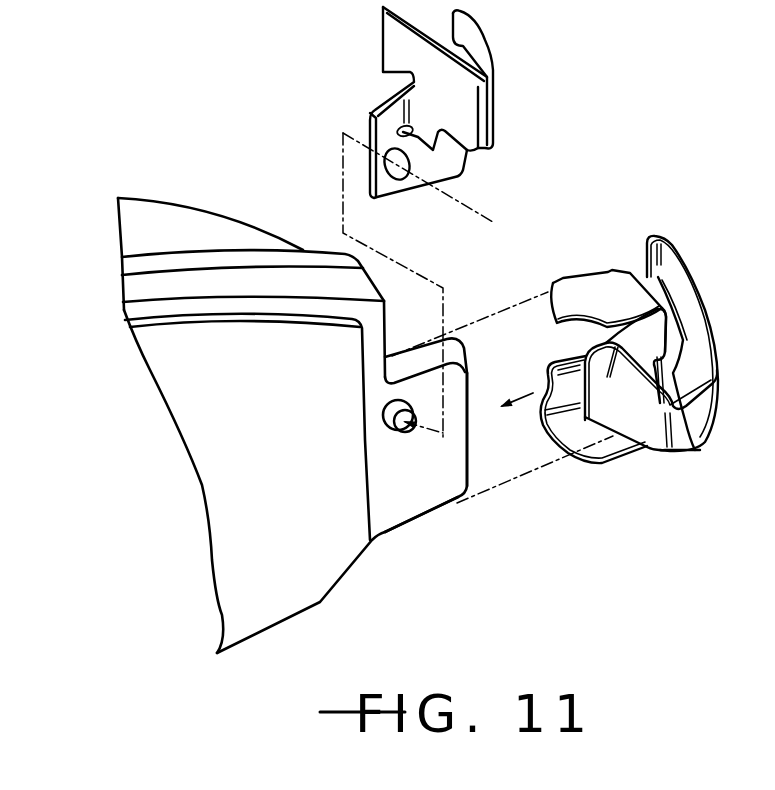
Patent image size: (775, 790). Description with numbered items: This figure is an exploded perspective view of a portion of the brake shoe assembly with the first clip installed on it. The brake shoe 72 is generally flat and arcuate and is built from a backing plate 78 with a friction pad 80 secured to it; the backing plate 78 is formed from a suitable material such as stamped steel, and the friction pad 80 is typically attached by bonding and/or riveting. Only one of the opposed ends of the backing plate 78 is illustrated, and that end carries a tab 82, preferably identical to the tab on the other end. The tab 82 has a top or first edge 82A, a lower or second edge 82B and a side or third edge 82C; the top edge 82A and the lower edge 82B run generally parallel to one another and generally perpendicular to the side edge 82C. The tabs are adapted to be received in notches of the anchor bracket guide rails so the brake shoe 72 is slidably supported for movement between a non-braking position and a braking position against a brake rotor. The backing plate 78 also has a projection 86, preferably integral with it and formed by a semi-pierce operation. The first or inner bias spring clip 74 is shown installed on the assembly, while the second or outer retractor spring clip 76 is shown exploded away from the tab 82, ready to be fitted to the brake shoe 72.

The brake shoe 72 is at (271, 226).
The first or inner bias spring clip 74 is at (502, 124).
The second or outer retractor spring clip 76 is at (660, 480).
The backing plate 78 is at (122, 297).
The friction pad 80 is at (175, 230).
The tab 82 is at (461, 431).
The top or first edge 82A is at (417, 357).
The lower or second edge 82B is at (402, 527).
The side or third edge 82C is at (483, 400).
The projection 86 is at (395, 432).